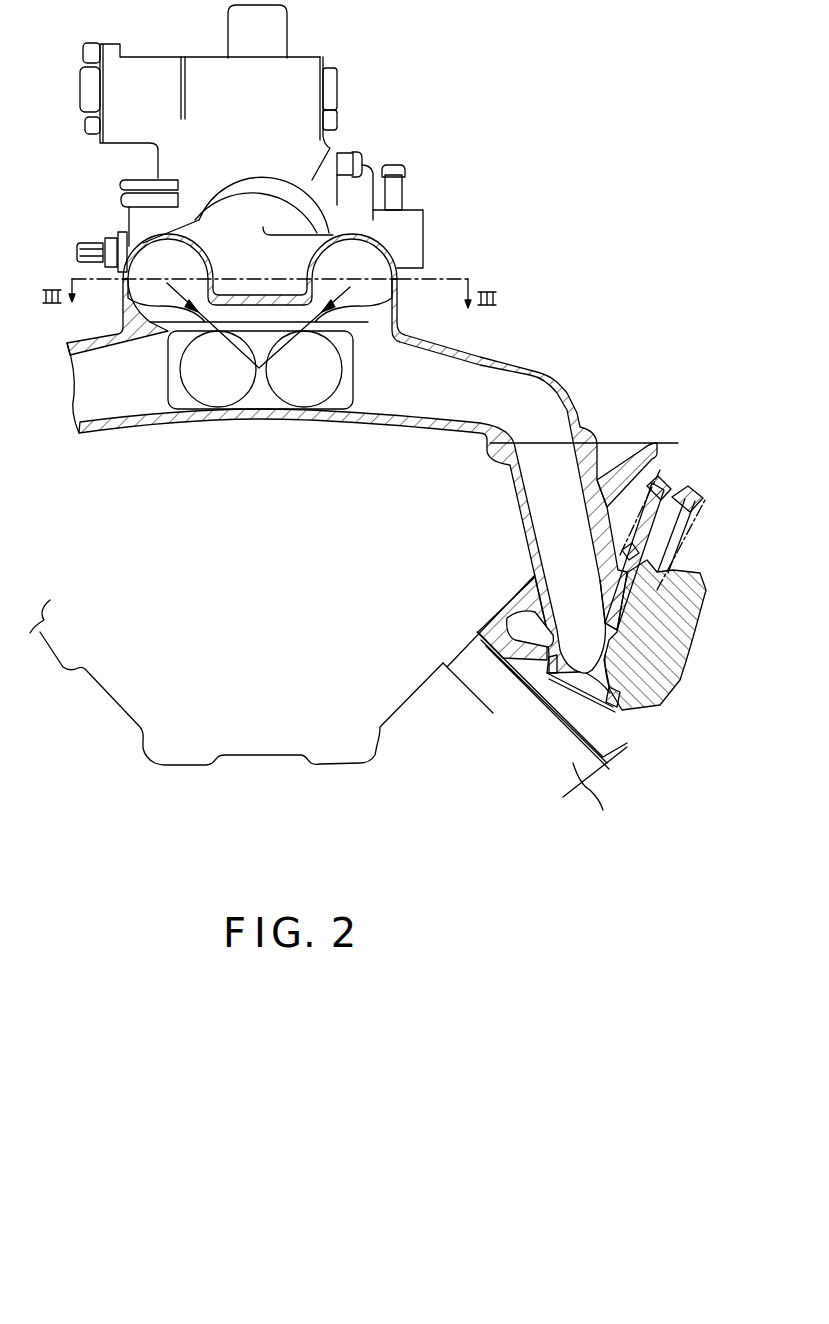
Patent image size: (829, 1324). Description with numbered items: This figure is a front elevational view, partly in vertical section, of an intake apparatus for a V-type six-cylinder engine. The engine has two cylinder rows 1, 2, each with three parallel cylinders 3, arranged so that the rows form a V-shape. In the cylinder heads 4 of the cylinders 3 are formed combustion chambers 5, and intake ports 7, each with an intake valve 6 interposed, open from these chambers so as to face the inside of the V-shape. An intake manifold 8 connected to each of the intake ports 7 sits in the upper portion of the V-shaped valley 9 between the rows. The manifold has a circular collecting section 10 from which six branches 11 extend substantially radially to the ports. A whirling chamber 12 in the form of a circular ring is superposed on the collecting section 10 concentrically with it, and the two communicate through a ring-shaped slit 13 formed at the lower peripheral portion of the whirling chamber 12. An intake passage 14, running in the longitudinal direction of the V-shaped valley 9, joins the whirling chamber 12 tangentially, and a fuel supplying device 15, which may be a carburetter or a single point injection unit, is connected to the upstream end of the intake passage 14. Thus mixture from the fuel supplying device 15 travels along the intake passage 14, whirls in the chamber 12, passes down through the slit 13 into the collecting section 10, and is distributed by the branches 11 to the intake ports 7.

The cylinder row 1 is at (120, 697).
The cylinder row 2 is at (397, 703).
The cylinder 3 is at (577, 763).
The cylinder head 4 is at (647, 647).
The combustion chamber 5 is at (603, 717).
The intake valve 6 is at (613, 683).
The intake port 7 is at (547, 537).
The intake manifold 8 is at (474, 350).
The V-shaped valley 9 is at (283, 542).
The circular collecting section 10 is at (260, 400).
The branches 11 is at (90, 390).
The whirling chamber 12 is at (128, 248).
The ring-shaped slit 13 is at (123, 323).
The intake passage 14 is at (245, 208).
The fuel supplying device 15 is at (298, 107).